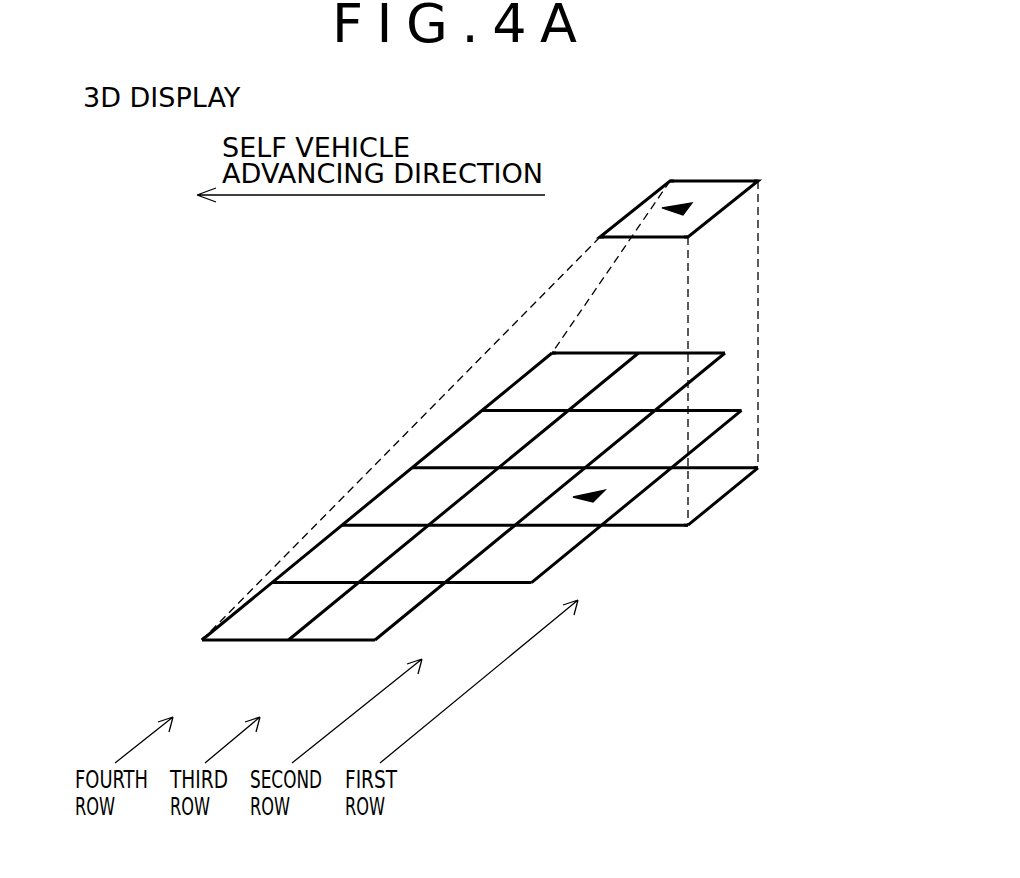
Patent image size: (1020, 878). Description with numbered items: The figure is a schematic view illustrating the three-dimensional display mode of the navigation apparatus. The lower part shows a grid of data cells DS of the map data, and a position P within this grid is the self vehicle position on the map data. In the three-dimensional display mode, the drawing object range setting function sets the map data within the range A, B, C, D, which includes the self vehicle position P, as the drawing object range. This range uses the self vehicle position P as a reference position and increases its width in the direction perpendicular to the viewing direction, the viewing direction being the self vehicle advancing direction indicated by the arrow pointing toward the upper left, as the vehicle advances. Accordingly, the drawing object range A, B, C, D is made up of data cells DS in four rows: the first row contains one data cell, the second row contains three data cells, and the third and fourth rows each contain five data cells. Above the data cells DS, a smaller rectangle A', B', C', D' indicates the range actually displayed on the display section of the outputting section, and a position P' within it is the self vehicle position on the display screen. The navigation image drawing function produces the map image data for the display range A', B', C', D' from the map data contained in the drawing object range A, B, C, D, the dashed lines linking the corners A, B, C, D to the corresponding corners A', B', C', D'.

The data cell DS is at (665, 360).
The corner A of drawing object range A is at (182, 622).
The corner B of drawing object range B is at (580, 336).
The corner C of drawing object range C is at (709, 544).
The corner D of drawing object range D is at (778, 449).
The self vehicle position on map data P is at (591, 541).
The corner A' of display range A' is at (578, 221).
The corner B' of display range B' is at (648, 163).
The corner C' of display range C' is at (711, 256).
The corner D' of display range D' is at (781, 163).
The self vehicle position on display screen P' is at (695, 166).